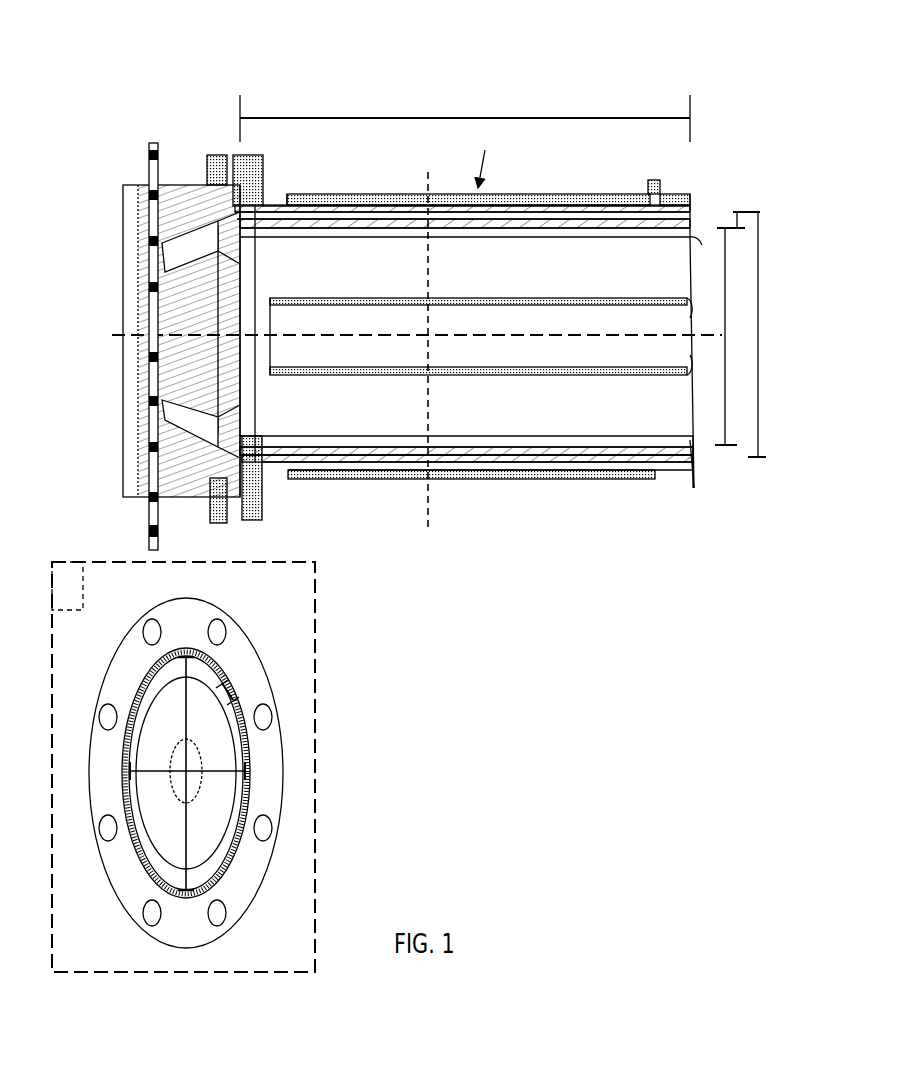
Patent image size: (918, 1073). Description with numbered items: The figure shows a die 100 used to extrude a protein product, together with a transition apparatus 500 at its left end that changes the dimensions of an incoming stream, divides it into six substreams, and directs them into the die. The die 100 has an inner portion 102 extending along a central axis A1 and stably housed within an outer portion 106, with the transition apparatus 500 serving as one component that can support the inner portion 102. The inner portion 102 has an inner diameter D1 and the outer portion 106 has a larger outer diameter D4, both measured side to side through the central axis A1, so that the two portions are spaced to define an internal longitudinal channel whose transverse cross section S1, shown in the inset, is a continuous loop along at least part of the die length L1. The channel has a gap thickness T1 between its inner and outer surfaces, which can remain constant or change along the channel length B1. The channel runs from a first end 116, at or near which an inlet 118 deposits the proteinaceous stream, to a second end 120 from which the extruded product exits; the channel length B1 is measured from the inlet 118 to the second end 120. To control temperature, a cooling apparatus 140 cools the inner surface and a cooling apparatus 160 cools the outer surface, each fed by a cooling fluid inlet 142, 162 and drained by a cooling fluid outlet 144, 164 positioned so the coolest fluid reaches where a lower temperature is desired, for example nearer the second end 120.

The die 100 is at (331, 70).
The transition apparatus 500 is at (158, 135).
The inner portion 102 is at (292, 443).
The outer portion 106 is at (681, 207).
The first end 116 is at (228, 228).
The inlet 118 is at (237, 214).
The second end 120 is at (707, 457).
The cooling apparatus 140 is at (560, 420).
The cooling fluid inlet 142 is at (694, 237).
The cooling fluid outlet 144 is at (697, 447).
The cooling apparatus 160 is at (602, 482).
The cooling fluid inlet 162 is at (655, 178).
The cooling fluid outlet 164 is at (290, 486).
The central axis A1 is at (405, 335).
The transverse cross section S1 is at (428, 365).
The length of the die L1 is at (465, 117).
The length of the channel B1 is at (489, 104).
The inner diameter D1 is at (433, 504).
The outer diameter D4 is at (476, 551).
The gap thickness T1 is at (488, 458).